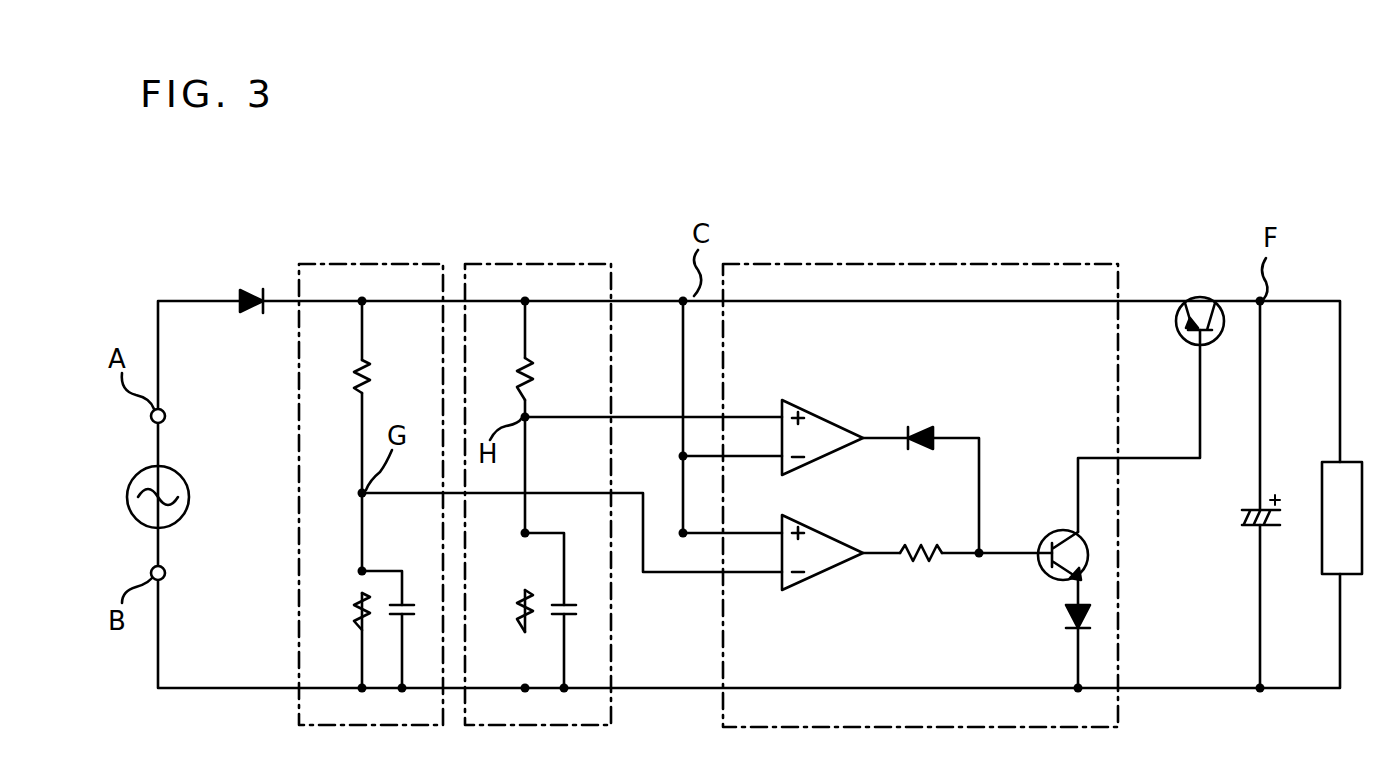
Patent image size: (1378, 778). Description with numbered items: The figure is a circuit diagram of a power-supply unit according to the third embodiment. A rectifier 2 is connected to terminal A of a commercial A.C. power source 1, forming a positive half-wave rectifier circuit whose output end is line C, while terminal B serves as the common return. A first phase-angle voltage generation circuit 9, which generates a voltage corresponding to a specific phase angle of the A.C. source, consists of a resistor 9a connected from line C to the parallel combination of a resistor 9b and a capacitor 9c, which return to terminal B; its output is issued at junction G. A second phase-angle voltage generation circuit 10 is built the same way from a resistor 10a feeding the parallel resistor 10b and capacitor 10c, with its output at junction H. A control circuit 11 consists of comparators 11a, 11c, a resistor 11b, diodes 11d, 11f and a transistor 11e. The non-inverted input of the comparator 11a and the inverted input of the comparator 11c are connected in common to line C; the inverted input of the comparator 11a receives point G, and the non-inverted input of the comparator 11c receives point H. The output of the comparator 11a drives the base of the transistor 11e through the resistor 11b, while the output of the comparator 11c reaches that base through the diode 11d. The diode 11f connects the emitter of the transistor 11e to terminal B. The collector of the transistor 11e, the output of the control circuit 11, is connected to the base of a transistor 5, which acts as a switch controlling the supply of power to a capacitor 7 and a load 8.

The commercial A.C. power source 1 is at (128, 488).
The rectifier 2 is at (258, 288).
The transistor 5 is at (1202, 296).
The capacitor 7 is at (1253, 508).
The load 8 is at (1332, 576).
The first phase-angle voltage generation circuit 9 is at (400, 263).
The resistor 9a is at (370, 376).
The resistor 9b is at (354, 600).
The capacitor 9c is at (406, 602).
The second phase-angle voltage generation circuit 10 is at (553, 264).
The resistor 10a is at (532, 382).
The resistor 10b is at (520, 600).
The capacitor 10c is at (566, 600).
The control circuit 11 is at (919, 264).
The comparator 11a is at (800, 588).
The resistor 11b is at (921, 560).
The comparator 11c is at (815, 410).
The diode 11d is at (924, 430).
The transistor 11e is at (1054, 535).
The diode 11f is at (1068, 618).